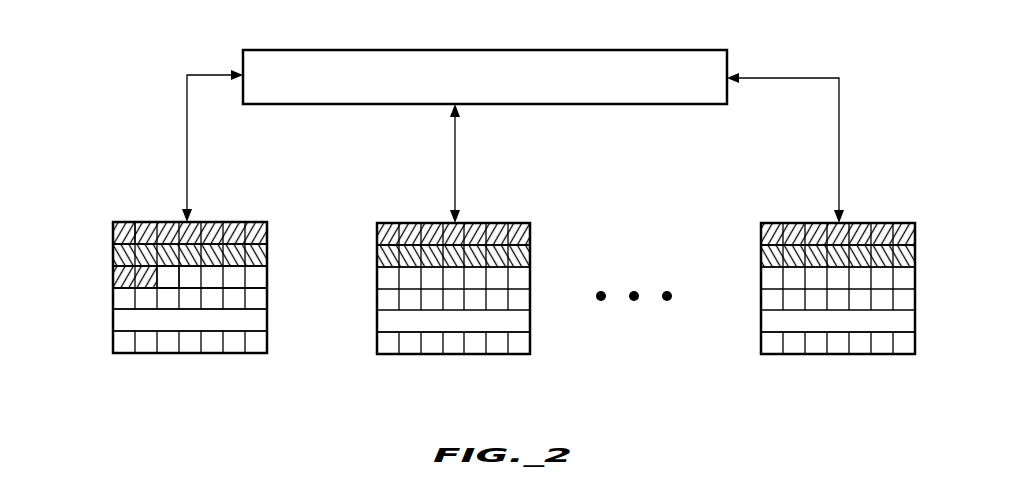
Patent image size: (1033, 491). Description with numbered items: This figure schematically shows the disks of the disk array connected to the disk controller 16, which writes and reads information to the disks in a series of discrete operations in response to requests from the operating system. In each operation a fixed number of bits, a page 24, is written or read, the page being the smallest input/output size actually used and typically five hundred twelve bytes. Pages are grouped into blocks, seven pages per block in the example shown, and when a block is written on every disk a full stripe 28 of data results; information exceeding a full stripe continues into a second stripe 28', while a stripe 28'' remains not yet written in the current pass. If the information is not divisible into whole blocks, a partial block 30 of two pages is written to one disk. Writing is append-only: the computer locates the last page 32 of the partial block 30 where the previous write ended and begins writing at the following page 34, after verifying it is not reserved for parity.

The disk controller 16 is at (592, 50).
The page 24 is at (127, 222).
The full stripe 28 is at (149, 223).
The second stripe 28' is at (149, 250).
The stripe 28'' is at (149, 309).
The partial block 30 is at (101, 278).
The page 32 is at (147, 278).
The page 34 is at (170, 273).